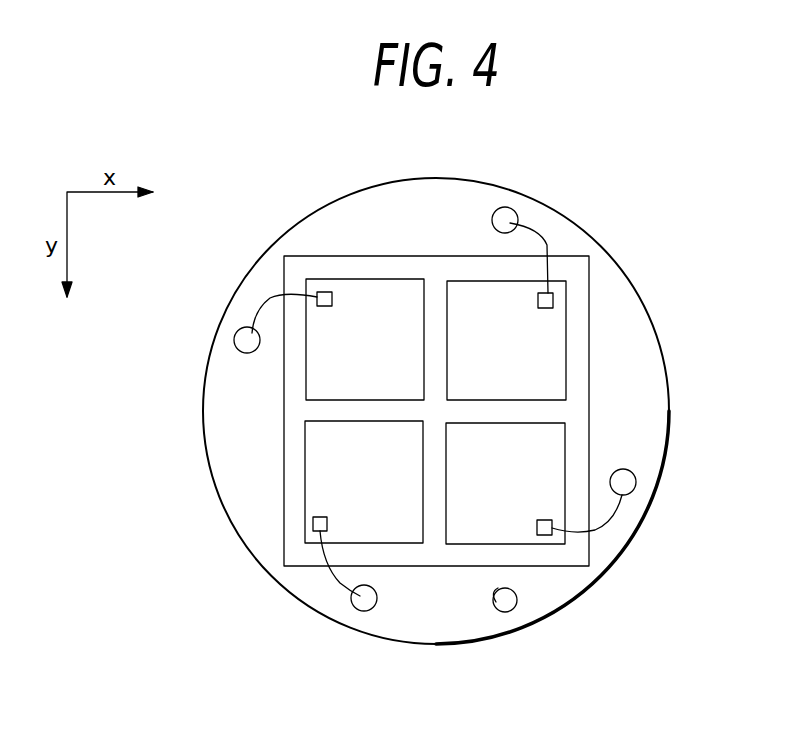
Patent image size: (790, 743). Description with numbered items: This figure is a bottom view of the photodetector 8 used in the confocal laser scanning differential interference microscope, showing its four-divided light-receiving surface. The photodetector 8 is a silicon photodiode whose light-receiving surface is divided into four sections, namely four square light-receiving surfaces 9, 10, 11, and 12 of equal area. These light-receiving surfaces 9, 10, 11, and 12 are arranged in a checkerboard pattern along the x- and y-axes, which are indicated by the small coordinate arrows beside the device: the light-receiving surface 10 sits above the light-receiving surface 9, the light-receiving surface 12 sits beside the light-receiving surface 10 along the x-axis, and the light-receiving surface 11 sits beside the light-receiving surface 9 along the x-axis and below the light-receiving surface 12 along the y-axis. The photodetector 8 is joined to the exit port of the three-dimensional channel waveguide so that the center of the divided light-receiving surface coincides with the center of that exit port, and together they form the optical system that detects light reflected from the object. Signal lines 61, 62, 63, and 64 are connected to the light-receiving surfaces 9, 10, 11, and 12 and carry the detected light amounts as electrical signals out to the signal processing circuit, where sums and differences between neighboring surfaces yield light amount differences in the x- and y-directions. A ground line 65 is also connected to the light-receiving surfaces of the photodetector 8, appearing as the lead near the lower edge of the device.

The photodetector 8 is at (550, 200).
The light-receiving surface 9 is at (313, 485).
The light-receiving surface 10 is at (353, 292).
The light-receiving surface 11 is at (553, 463).
The light-receiving surface 12 is at (558, 348).
The signal line 61 is at (328, 580).
The signal line 62 is at (257, 310).
The signal line 63 is at (545, 240).
The signal line 64 is at (615, 515).
The ground line 65 is at (460, 610).